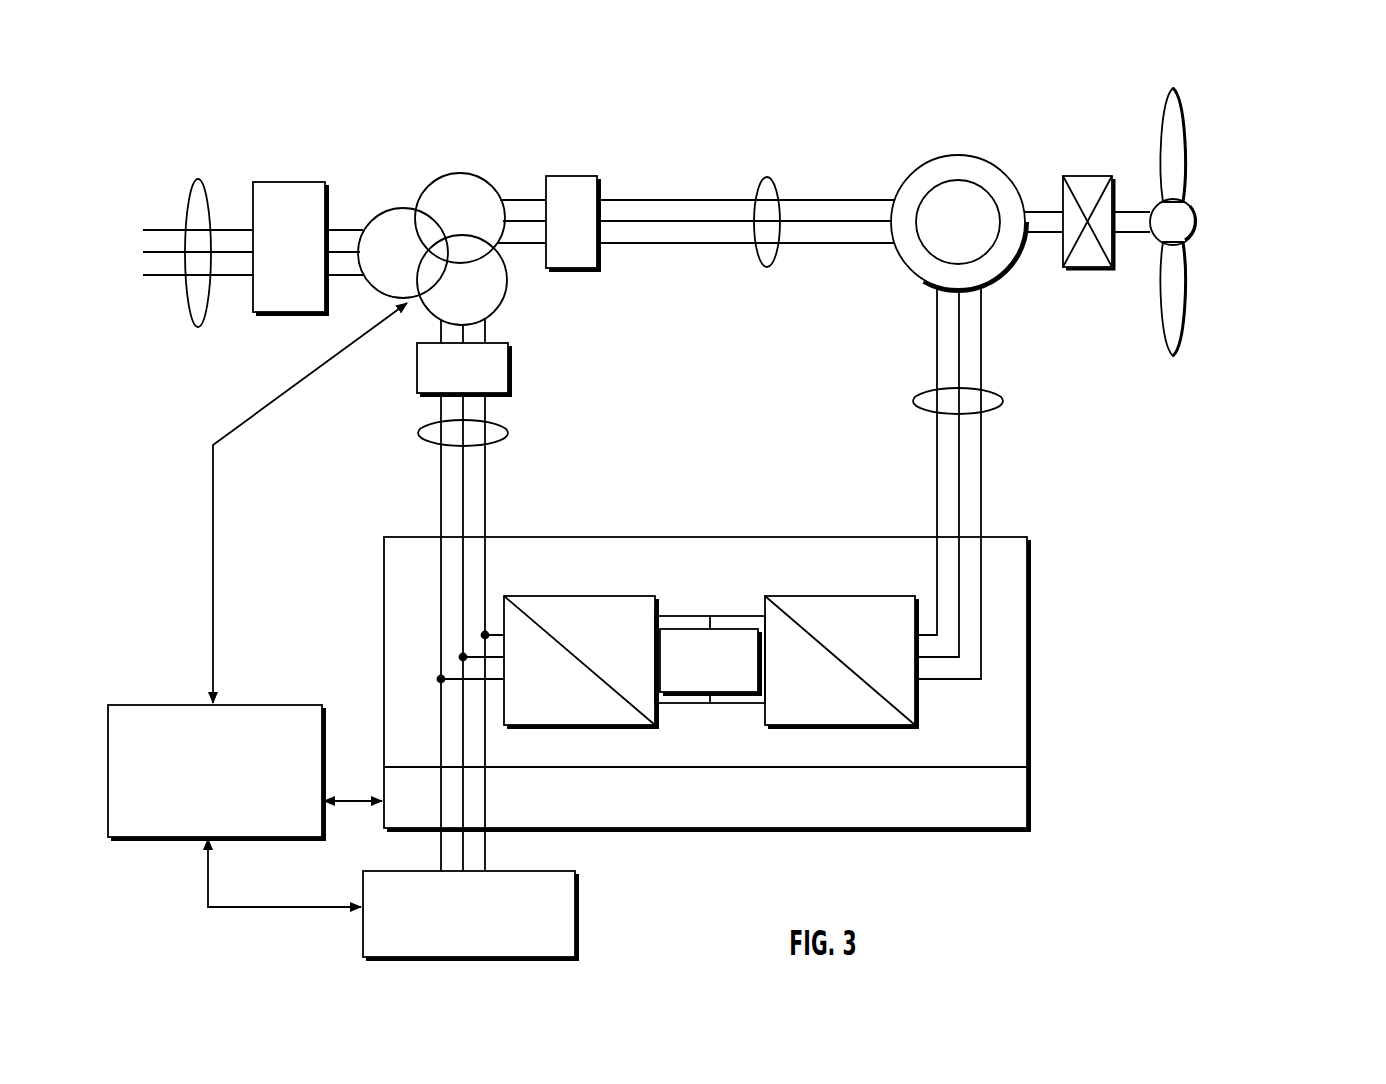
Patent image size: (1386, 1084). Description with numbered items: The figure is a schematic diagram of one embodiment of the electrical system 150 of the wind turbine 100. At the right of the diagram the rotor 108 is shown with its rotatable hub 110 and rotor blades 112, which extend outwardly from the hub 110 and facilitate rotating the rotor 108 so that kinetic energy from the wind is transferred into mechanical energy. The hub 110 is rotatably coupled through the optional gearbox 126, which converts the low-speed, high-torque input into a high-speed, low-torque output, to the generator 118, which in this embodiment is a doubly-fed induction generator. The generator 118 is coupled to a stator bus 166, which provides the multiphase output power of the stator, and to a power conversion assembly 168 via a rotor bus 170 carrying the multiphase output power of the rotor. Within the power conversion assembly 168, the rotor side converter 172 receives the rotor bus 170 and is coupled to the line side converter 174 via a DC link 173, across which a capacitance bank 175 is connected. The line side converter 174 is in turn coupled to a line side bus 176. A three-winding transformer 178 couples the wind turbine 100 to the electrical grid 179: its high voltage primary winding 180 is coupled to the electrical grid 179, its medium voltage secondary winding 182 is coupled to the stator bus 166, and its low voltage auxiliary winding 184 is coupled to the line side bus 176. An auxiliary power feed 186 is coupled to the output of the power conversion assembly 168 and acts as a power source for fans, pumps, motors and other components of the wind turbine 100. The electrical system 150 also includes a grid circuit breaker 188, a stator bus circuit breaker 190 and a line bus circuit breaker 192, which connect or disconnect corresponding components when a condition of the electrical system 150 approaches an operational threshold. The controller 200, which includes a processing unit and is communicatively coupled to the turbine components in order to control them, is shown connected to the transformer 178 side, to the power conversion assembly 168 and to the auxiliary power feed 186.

The wind turbine 100 is at (845, 116).
The rotor 108 is at (1256, 222).
The rotatable hub 110 is at (1200, 222).
The rotor blade 112 is at (1190, 133).
The generator 118 is at (957, 155).
The gearbox 126 is at (1077, 176).
The electrical system 150 is at (643, 96).
The stator bus 166 is at (767, 176).
The power conversion assembly 168 is at (1027, 598).
The rotor bus 170 is at (1003, 401).
The rotor side converter 172 is at (835, 727).
The DC link 173 is at (710, 612).
The line side converter 174 is at (613, 727).
The capacitance bank 175 is at (683, 703).
The line side bus 176 is at (418, 432).
The transformer 178 is at (442, 190).
The electrical grid 179 is at (198, 178).
The primary winding 180 is at (383, 213).
The secondary winding 182 is at (459, 173).
The auxiliary winding 184 is at (505, 285).
The auxiliary power feed 186 is at (363, 935).
The grid circuit breaker 188 is at (290, 182).
The stator bus circuit breaker 190 is at (560, 176).
The line bus circuit breaker 192 is at (417, 362).
The controller 200 is at (276, 705).